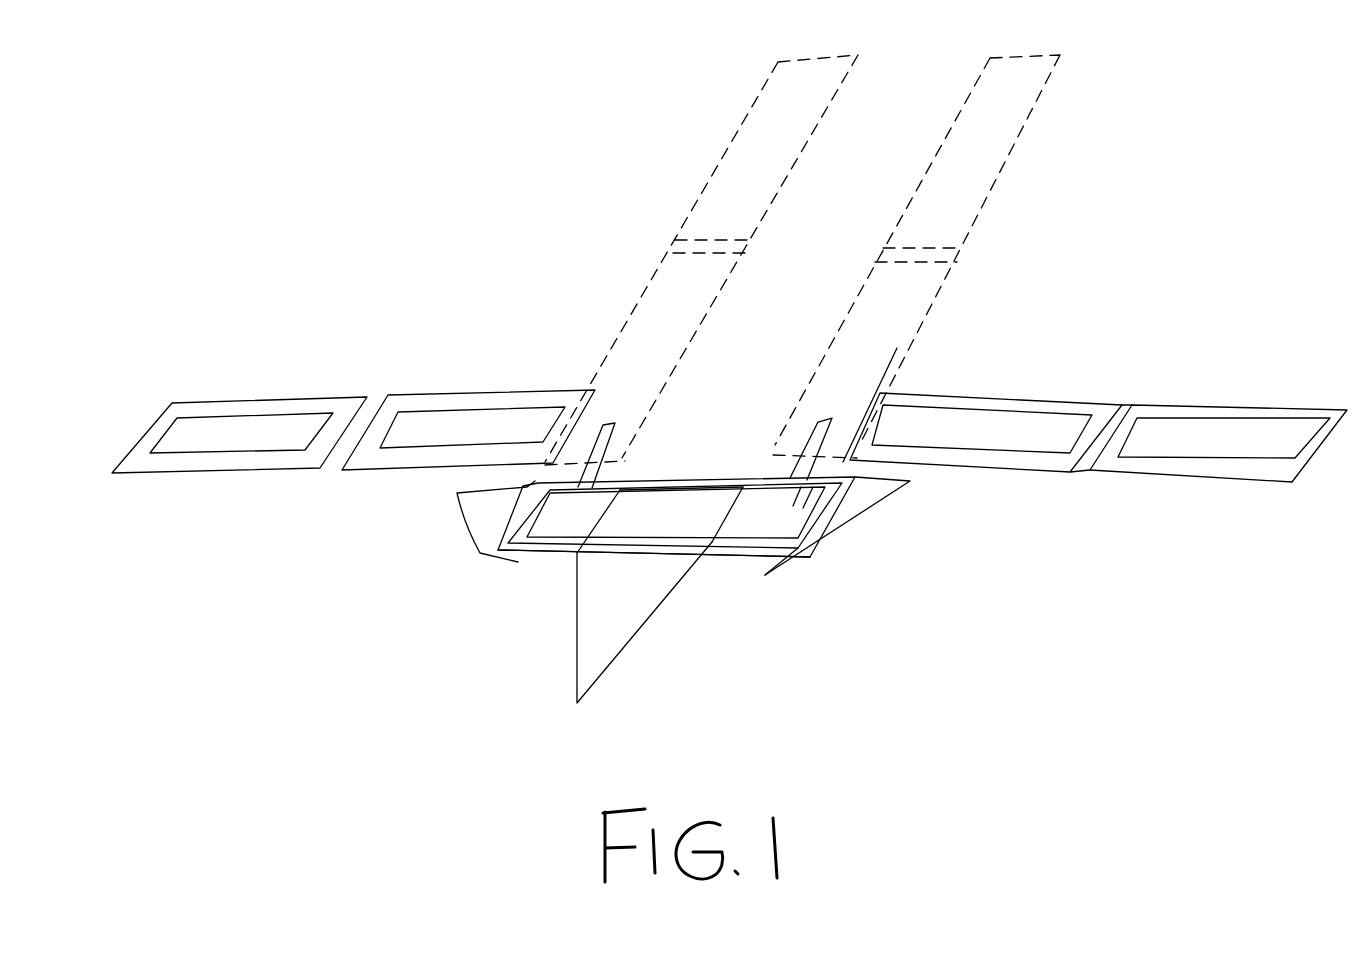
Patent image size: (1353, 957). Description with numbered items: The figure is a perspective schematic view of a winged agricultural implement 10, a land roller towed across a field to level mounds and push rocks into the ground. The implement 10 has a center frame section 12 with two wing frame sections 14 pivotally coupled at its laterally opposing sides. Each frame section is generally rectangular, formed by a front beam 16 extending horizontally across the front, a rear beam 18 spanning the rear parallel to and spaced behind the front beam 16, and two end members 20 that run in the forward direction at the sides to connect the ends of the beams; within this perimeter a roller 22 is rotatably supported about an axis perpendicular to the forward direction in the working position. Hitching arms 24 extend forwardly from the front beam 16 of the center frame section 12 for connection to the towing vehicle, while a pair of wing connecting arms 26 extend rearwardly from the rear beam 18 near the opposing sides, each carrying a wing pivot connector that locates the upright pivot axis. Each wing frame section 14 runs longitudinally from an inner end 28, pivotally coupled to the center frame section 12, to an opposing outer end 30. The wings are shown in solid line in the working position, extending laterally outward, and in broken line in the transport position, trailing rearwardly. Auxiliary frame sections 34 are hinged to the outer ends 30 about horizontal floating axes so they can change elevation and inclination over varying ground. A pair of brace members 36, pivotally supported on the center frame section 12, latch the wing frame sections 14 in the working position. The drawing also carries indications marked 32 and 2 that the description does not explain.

The winged agricultural implement 10 is at (377, 150).
The center frame section 12 is at (662, 465).
The wing frame sections 14 is at (498, 358).
The front beam 16 is at (605, 553).
The rear beam 18 is at (682, 484).
The end members 20 is at (528, 528).
The roller 22 is at (682, 535).
The hitching arms 24 is at (623, 637).
The wing connecting arms 26 is at (610, 418).
The inner end 28 is at (920, 358).
The outer end 30 is at (1113, 373).
The strut 32 is at (760, 580).
The auxiliary frame sections 34 is at (280, 380).
The brace members 36 is at (465, 515).
The section line 2- 2 is at (732, 593).